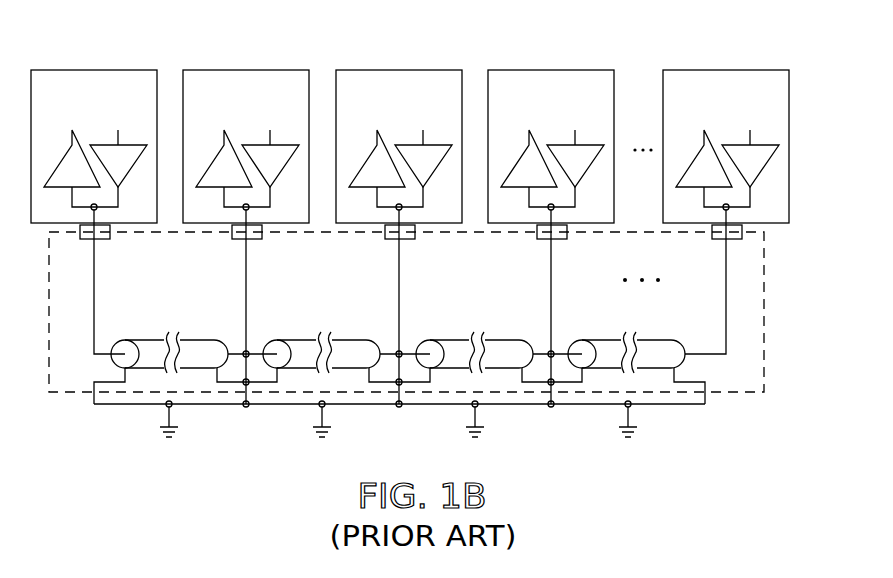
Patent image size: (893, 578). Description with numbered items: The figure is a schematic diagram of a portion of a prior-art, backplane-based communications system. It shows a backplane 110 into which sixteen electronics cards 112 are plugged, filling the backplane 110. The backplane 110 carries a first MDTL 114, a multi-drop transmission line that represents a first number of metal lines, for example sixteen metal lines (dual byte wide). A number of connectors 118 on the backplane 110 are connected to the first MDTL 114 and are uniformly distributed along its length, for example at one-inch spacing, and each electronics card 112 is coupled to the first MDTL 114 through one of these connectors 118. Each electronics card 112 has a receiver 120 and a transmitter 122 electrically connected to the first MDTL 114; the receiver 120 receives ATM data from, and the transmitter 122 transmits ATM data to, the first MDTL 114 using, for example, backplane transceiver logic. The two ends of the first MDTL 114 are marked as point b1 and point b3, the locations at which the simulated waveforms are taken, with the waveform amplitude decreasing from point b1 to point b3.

The backplane 110 is at (424, 323).
The electronics card 112 is at (410, 125).
The first MDTL 114 is at (98, 357).
The connector 118 is at (411, 245).
The receiver 120 is at (384, 142).
The transmitter 122 is at (437, 142).
The point b1 is at (101, 349).
The point b3 is at (718, 350).